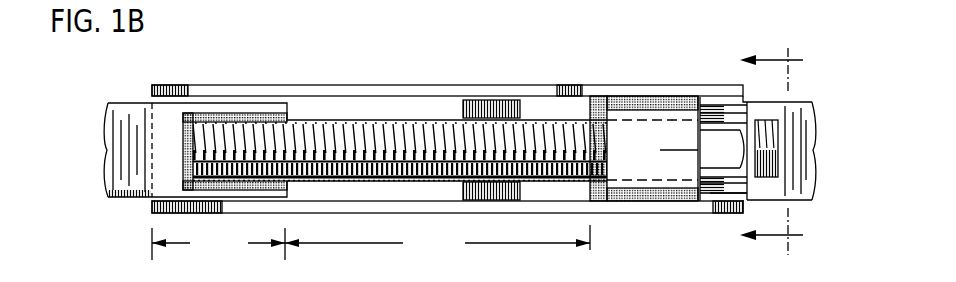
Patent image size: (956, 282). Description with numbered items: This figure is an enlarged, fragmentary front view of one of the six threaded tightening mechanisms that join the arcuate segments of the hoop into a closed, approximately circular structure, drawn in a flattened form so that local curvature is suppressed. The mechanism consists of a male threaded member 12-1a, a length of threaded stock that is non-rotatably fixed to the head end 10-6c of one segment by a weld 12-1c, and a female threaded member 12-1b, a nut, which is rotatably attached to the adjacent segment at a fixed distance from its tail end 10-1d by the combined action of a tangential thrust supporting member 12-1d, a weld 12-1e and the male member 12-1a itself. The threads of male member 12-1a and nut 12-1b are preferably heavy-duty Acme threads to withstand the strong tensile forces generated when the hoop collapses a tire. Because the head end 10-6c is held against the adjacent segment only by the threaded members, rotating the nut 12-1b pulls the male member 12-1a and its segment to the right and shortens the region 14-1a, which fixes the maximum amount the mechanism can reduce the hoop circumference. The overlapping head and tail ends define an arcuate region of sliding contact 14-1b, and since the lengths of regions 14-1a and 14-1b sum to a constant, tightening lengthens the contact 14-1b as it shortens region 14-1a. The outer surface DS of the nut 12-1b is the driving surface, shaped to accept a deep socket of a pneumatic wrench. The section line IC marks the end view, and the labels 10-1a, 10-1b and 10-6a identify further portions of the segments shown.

The optical fiber cable (right) 10-1a is at (802, 100).
The outer housing sleeve 10-1b is at (368, 92).
The tail end of segment 10-1d is at (152, 208).
The sleeve end portion 10-6a is at (135, 102).
The head end of segment 10-6c is at (292, 112).
The male threaded member 12-1a is at (315, 120).
The female threaded member 12-1b is at (708, 100).
The weld 12-1c is at (250, 116).
The tangential thrust supporting member 12-1d is at (643, 117).
The weld 12-1e is at (605, 62).
The region 14-1a is at (437, 241).
The arcuate region of contact 14-1b is at (218, 244).
The driving surface DS is at (713, 190).
The section line IC is at (760, 151).